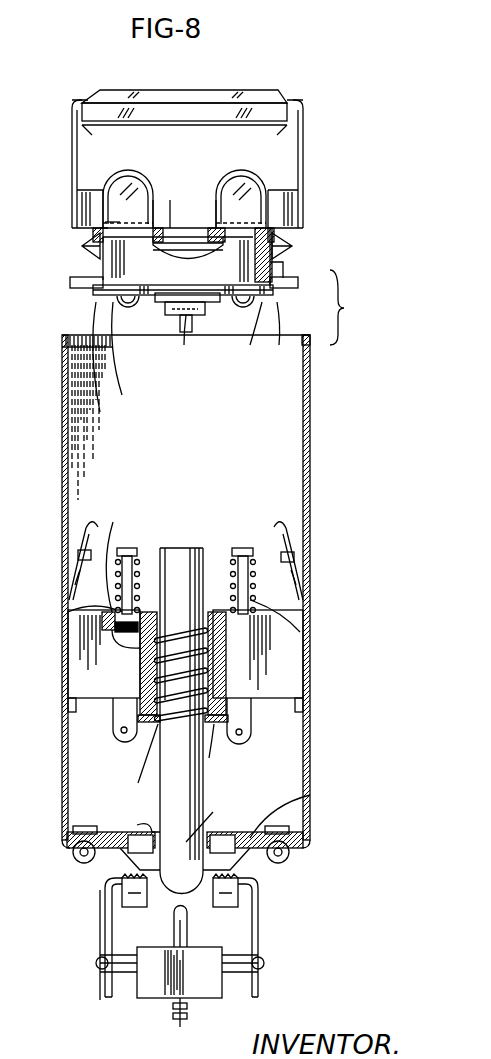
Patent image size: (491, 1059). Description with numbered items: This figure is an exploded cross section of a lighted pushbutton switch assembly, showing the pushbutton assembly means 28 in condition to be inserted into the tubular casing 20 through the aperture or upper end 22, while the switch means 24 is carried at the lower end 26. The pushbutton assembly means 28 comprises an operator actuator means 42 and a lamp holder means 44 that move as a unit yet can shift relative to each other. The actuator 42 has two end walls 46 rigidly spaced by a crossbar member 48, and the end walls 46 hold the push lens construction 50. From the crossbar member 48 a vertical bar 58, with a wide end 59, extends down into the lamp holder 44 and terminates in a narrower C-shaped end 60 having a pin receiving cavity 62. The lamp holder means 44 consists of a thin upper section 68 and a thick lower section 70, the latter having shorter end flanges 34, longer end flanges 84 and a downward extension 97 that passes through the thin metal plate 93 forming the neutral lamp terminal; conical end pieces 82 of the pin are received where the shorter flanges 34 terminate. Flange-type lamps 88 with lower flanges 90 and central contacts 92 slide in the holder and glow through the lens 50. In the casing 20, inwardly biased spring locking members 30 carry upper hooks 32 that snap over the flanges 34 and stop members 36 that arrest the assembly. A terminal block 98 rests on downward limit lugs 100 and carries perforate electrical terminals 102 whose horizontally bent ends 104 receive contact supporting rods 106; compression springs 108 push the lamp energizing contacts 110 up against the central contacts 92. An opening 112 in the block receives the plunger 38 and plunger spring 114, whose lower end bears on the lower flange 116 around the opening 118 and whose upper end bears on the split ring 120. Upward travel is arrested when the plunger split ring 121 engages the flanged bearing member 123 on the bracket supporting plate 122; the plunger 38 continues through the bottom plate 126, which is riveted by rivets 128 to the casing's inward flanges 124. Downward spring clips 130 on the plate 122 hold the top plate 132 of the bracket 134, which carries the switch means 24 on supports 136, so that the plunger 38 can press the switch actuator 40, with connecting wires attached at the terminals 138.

The casing 20 is at (28, 418).
The upper end 22 is at (90, 328).
The switch means 24 is at (160, 992).
The lower end 26 is at (75, 875).
The pushbutton assembly means 28 is at (334, 105).
The spring locking member 30 is at (77, 580).
The upper hook 32 is at (76, 518).
The shorter end flange 34 is at (283, 275).
The stop member 36 is at (78, 554).
The plunger 38 is at (188, 786).
The switch actuator 40 is at (187, 940).
The operator actuator means 42 is at (86, 88).
The lamp holder means 44 is at (62, 265).
The end wall 46 is at (72, 143).
The crossbar member 48 is at (167, 195).
The push lens construction 50 is at (165, 92).
The vertical bar 58 is at (176, 235).
The wide end 59 is at (162, 306).
The C-shaped end 60 is at (192, 318).
The pin receiving cavity 62 is at (180, 325).
The upper section 68 is at (105, 222).
The lower section 70 is at (105, 260).
The conical end piece 82 is at (90, 240).
The longer end flange 84 is at (70, 279).
The lamp 88 is at (135, 172).
The lower flange 90 is at (99, 380).
The central contact 92 is at (114, 338).
The thin metal plate 93 is at (306, 344).
The downward extension 97 is at (188, 298).
The terminal block 98 is at (290, 666).
The downward limit lug 100 is at (68, 705).
The electrical terminal 102 is at (118, 720).
The horizontally bent end 104 is at (68, 612).
The contact supporting rod 106 is at (137, 554).
The compression spring 108 is at (320, 636).
The lamp energizing contact 110 is at (132, 548).
The opening 112 is at (155, 652).
The plunger spring 114 is at (150, 728).
The lower flange 116 is at (227, 749).
The opening 118 is at (136, 770).
The split ring 120 is at (176, 600).
The plunger split ring 121 is at (218, 817).
The bracket supporting plate 122 is at (302, 809).
The flanged bearing member 123 is at (130, 822).
The inward flange 124 is at (70, 846).
The bottom plate 126 is at (110, 880).
The rivet 128 is at (72, 840).
The spring clip 130 is at (232, 900).
The top plate 132 is at (238, 877).
The bracket 134 is at (258, 930).
The support 136 is at (118, 958).
The terminal 138 is at (182, 1019).